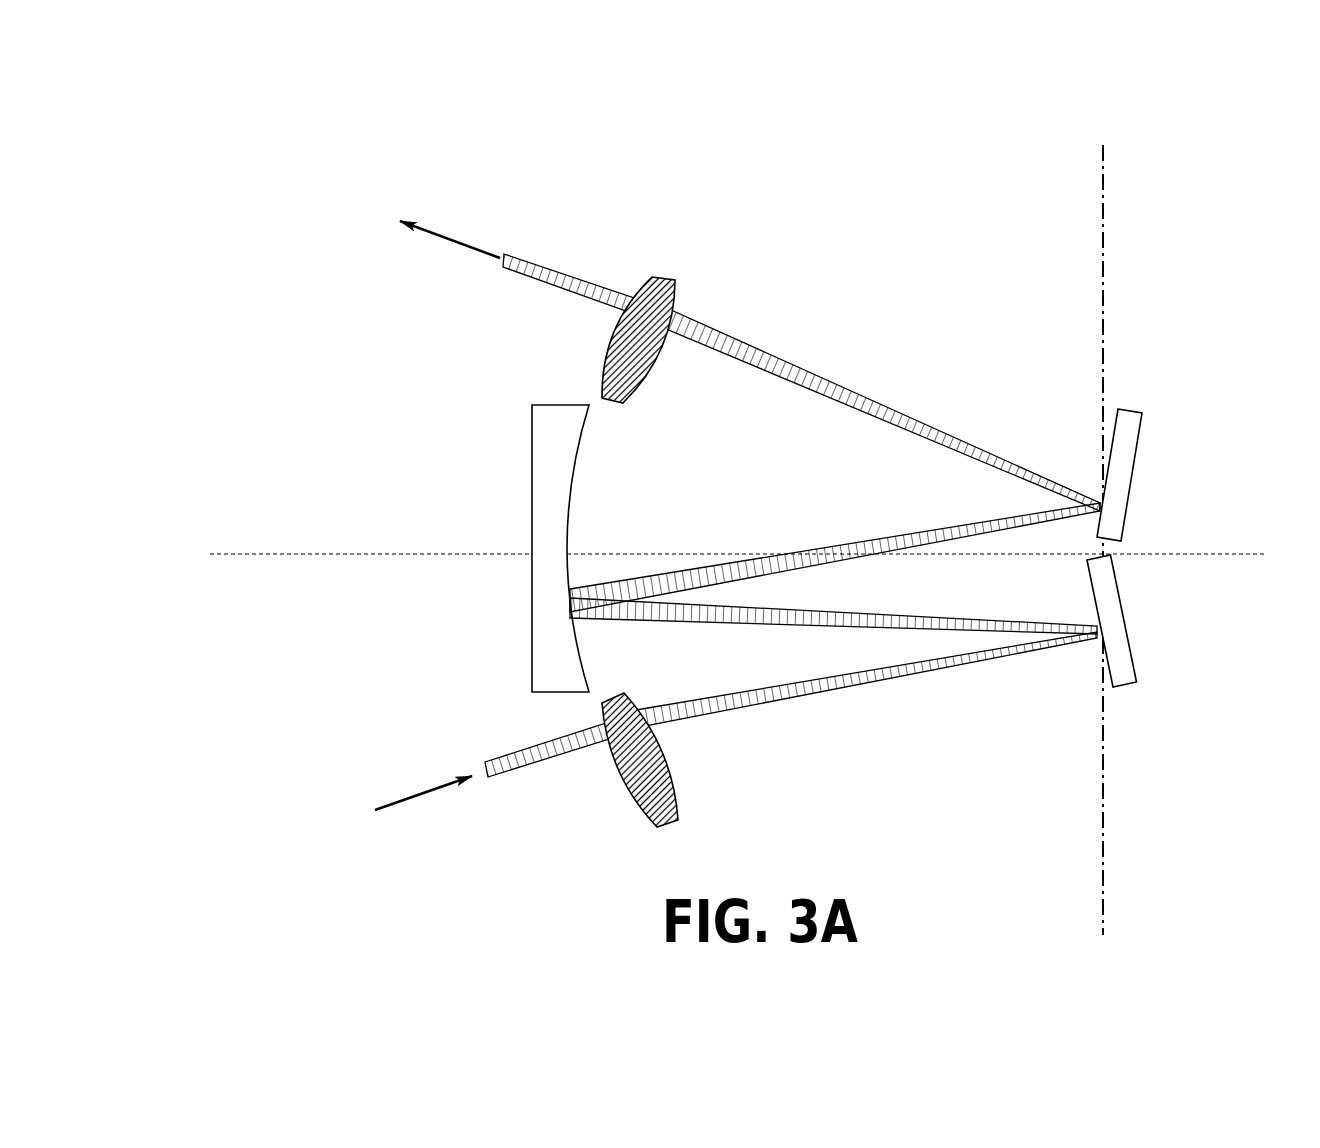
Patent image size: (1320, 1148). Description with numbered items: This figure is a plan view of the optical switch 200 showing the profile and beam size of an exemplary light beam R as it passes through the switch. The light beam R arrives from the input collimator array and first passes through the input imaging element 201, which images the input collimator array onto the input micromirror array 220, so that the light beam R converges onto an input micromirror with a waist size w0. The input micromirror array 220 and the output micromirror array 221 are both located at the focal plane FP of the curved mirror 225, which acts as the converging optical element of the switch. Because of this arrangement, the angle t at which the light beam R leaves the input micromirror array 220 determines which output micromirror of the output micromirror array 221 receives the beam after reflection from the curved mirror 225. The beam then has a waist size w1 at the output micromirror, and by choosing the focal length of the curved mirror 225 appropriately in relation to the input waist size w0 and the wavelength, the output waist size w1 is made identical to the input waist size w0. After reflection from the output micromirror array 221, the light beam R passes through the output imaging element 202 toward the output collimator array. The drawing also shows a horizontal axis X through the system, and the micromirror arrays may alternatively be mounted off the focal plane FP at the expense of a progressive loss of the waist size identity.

The optical switch 200 is at (1194, 156).
The input imaging element 201 is at (638, 813).
The output imaging element 202 is at (654, 276).
The input micromirror array 220 is at (1129, 665).
The output micromirror array 221 is at (1131, 424).
The curved mirror 225 is at (530, 612).
The light beam R is at (831, 684).
The optical axis X is at (404, 554).
The focal plane FP is at (1099, 827).
The waist size at the input micromirror w0 is at (1096, 646).
The waist size at the output micromirror w1 is at (1097, 514).
The angle t is at (1100, 425).